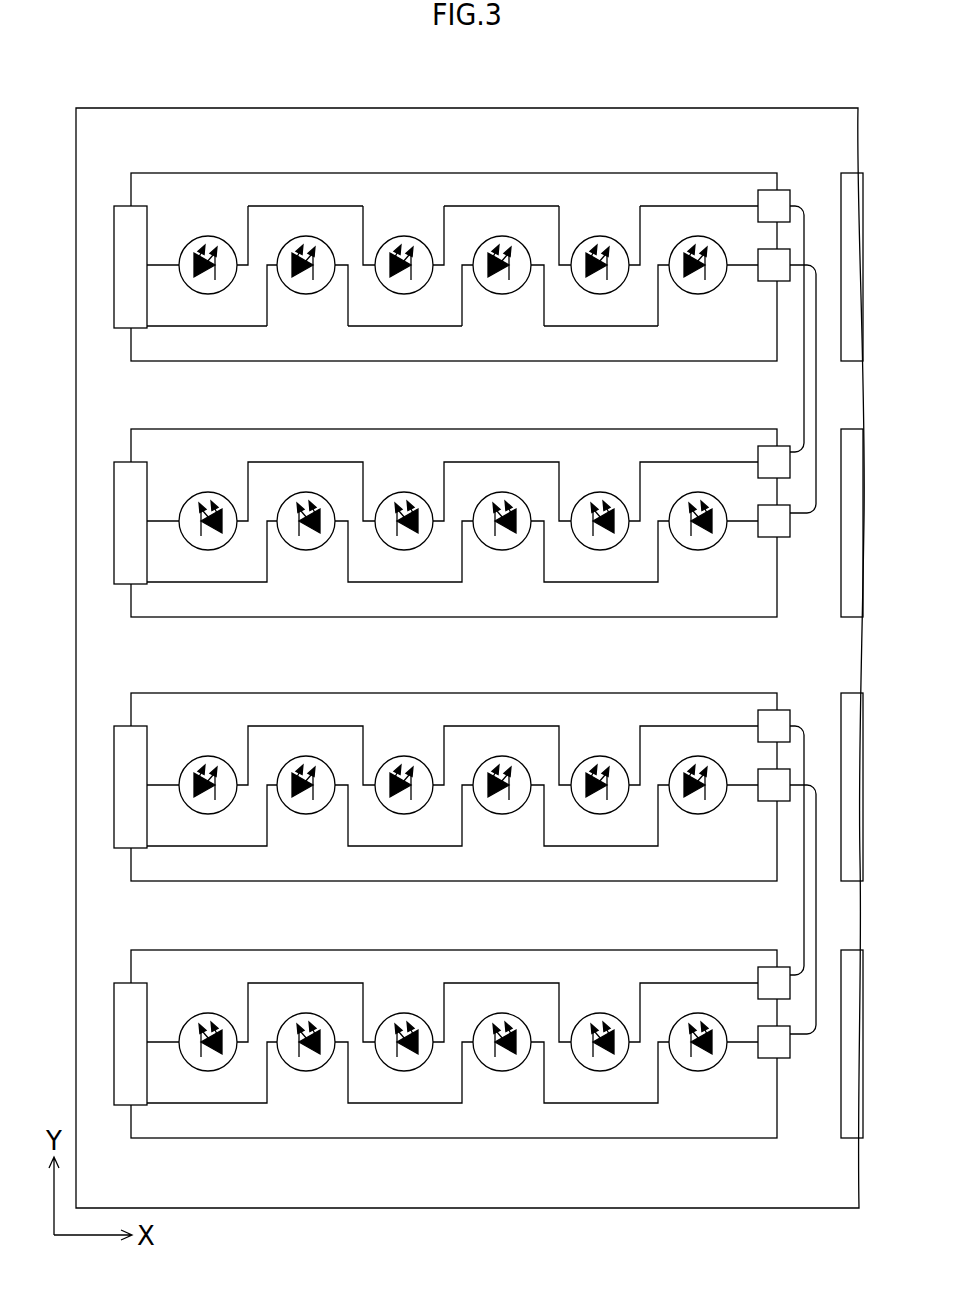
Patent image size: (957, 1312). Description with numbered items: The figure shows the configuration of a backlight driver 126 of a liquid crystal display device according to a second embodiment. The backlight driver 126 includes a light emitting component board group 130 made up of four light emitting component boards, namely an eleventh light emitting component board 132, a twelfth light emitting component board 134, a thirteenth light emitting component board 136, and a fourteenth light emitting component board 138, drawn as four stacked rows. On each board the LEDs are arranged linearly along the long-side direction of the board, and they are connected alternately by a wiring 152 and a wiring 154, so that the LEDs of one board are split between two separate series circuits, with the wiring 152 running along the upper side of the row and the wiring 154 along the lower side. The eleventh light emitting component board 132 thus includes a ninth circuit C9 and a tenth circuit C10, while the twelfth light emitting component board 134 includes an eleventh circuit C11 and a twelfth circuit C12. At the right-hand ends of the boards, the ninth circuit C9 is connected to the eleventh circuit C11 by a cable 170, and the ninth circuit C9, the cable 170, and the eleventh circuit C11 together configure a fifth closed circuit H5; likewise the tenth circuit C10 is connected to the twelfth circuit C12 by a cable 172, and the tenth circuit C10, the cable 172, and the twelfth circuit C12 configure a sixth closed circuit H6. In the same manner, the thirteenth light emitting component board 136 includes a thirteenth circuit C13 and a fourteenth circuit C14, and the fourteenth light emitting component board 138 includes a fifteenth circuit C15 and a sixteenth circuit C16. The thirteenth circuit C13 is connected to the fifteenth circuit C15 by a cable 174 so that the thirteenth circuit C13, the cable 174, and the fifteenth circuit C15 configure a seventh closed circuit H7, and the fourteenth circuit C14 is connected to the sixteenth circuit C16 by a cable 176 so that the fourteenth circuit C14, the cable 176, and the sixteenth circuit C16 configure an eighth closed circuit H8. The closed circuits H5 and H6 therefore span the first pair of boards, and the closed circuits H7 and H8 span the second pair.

The backlight driver 126 is at (634, 89).
The light emitting component board group 130 is at (497, 130).
The eleventh light emitting component board 132 is at (474, 270).
The twelfth light emitting component board 134 is at (471, 516).
The thirteenth light emitting component board 136 is at (474, 787).
The fourteenth light emitting component board 138 is at (471, 1040).
The wiring 152 is at (513, 205).
The wiring 154 is at (452, 328).
The cable 170 is at (806, 228).
The cable 172 is at (817, 490).
The cable 174 is at (806, 740).
The cable 176 is at (818, 998).
The ninth circuit C9 is at (452, 215).
The tenth circuit C10 is at (452, 320).
The eleventh circuit C11 is at (489, 433).
The twelfth circuit C12 is at (451, 599).
The thirteenth circuit C13 is at (401, 703).
The fourteenth circuit C14 is at (370, 870).
The fifteenth circuit C15 is at (489, 956).
The sixteenth circuit C16 is at (453, 1122).
The fifth closed circuit H5 is at (192, 397).
The sixth closed circuit H6 is at (471, 516).
The seventh closed circuit H7 is at (192, 916).
The eighth closed circuit H8 is at (471, 1040).